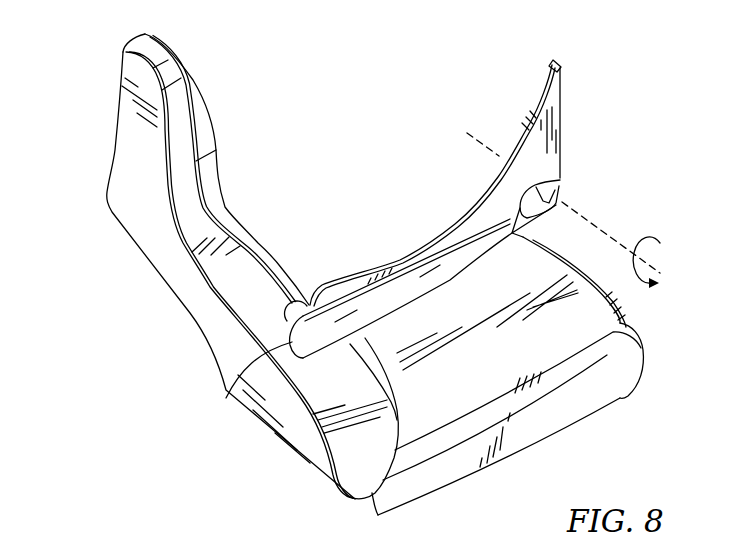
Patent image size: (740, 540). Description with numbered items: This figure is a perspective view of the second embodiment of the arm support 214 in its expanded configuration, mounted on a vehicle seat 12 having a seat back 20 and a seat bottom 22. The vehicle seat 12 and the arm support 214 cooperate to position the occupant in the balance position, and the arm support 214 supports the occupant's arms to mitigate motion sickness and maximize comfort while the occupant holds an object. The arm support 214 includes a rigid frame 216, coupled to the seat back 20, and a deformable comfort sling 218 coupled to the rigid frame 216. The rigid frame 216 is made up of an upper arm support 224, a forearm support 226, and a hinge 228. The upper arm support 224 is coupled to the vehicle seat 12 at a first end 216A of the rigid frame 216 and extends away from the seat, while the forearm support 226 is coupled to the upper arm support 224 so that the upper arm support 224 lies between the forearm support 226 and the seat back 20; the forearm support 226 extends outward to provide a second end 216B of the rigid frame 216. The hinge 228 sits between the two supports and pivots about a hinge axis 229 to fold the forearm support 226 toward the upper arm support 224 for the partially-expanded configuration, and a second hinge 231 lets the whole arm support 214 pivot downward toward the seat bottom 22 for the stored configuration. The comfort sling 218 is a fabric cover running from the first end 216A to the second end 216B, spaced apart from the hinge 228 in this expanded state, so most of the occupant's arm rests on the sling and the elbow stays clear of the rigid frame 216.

The vehicle seat 12 is at (78, 86).
The seat back 20 is at (163, 250).
The seat bottom 22 is at (592, 396).
The arm support 214 is at (428, 120).
The rigid frame 216 is at (542, 228).
The first end 216A is at (228, 397).
The second end 216B is at (562, 62).
The comfort sling 218 is at (452, 205).
The upper arm support 224 is at (367, 263).
The forearm support 226 is at (566, 108).
The hinge 228 is at (561, 177).
The hinge axis 229 is at (598, 222).
The second hinge 231 is at (293, 302).